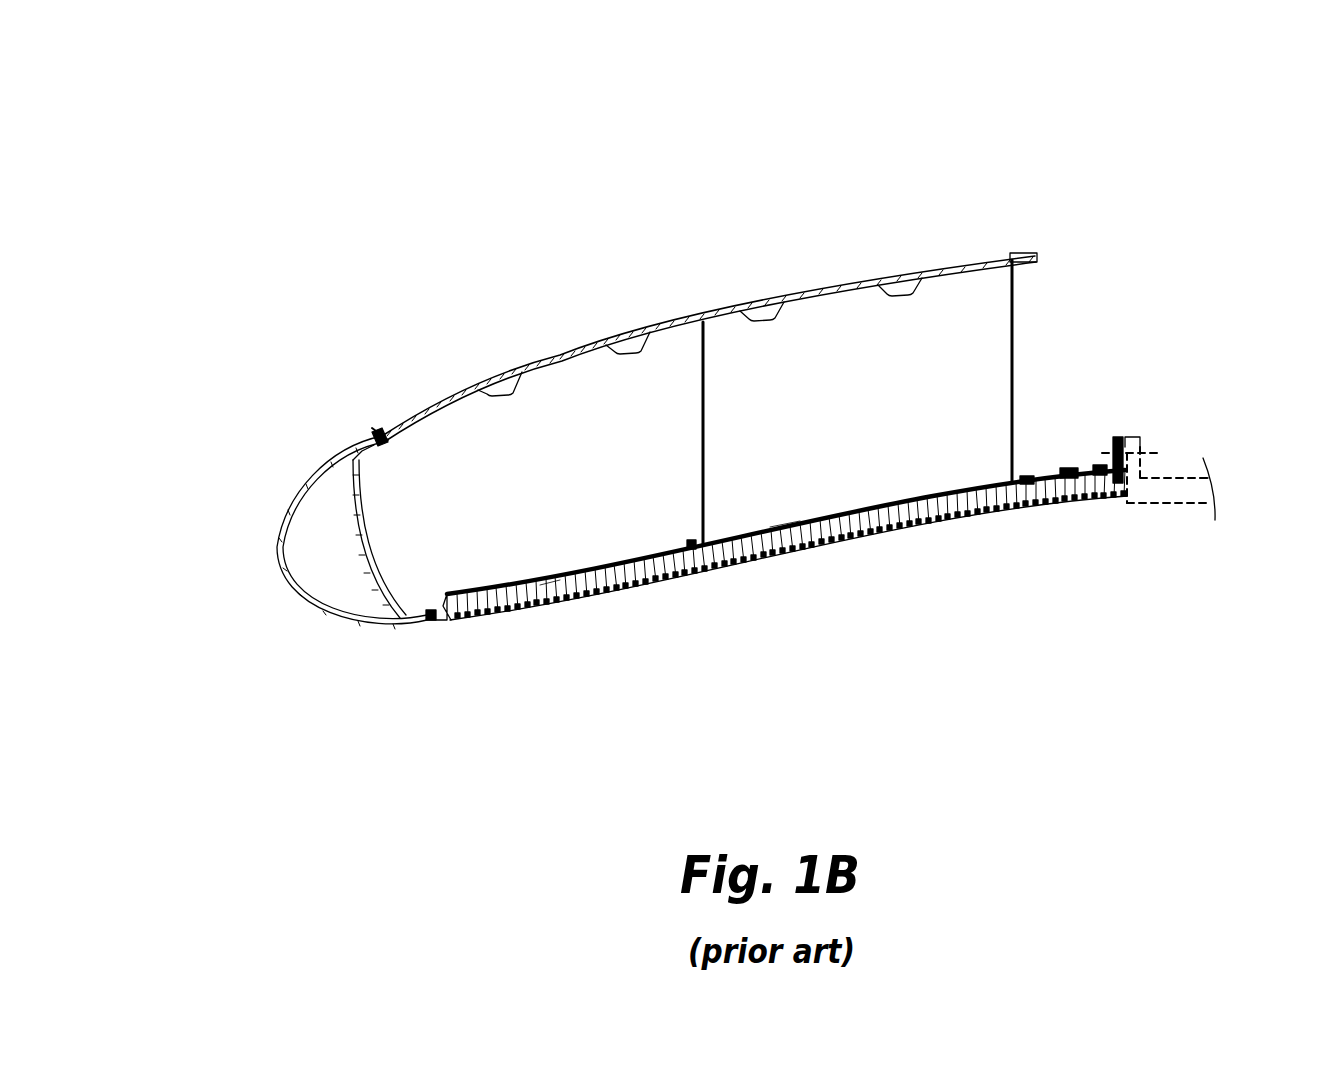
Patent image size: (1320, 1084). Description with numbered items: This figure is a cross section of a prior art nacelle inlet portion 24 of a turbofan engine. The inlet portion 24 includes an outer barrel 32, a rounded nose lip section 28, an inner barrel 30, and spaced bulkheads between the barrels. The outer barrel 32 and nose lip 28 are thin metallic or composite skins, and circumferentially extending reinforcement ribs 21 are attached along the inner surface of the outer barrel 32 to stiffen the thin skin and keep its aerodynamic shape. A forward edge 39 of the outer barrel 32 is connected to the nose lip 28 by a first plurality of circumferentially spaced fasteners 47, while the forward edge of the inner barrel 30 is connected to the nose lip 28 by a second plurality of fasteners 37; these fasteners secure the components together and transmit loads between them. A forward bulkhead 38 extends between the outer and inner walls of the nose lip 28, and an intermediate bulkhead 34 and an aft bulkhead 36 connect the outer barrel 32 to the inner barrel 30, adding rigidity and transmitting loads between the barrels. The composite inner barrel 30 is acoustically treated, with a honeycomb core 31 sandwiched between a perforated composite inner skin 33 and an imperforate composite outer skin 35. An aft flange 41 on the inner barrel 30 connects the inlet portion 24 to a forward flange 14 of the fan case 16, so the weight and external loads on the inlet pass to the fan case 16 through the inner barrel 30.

The inlet portion 24 is at (528, 205).
The outer barrel 32 is at (545, 357).
The reinforcement ribs 21 is at (770, 327).
The nose lip section 28 is at (287, 572).
The forward edge 39 is at (376, 428).
The fasteners 47 is at (372, 437).
The forward bulkhead 38 is at (352, 543).
The fasteners 37 is at (430, 613).
The inner barrel 30 is at (703, 548).
The honeycomb core 31 is at (557, 590).
The perforated composite inner skin 33 is at (913, 530).
The intermediate bulkhead 34 is at (703, 425).
The imperforate composite outer skin 35 is at (784, 522).
The aft bulkhead 36 is at (1013, 362).
The aft flange 41 is at (1113, 445).
The forward flange 14 is at (1140, 444).
The fan case 16 is at (1168, 505).